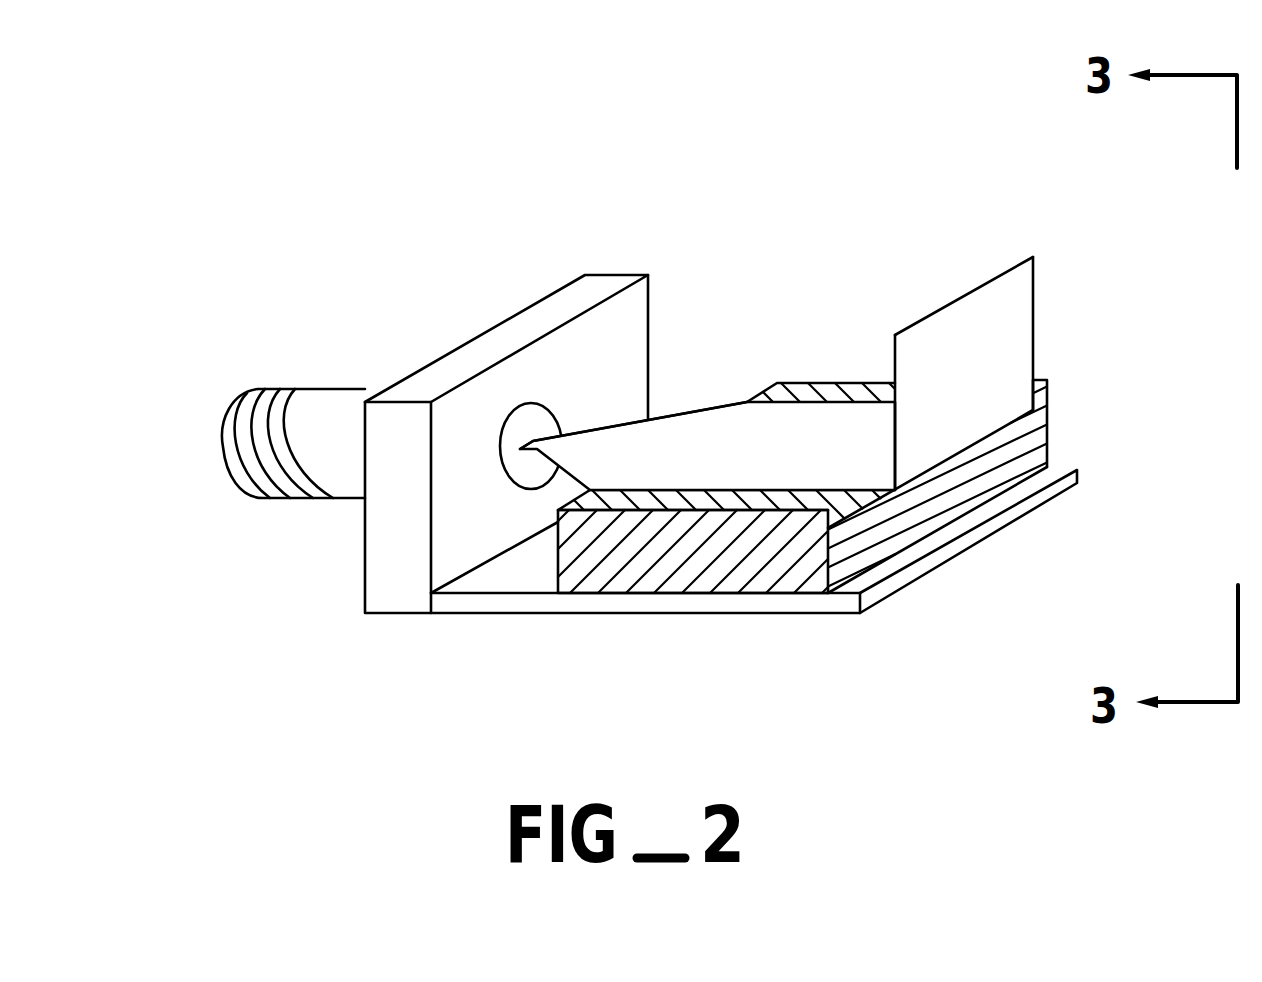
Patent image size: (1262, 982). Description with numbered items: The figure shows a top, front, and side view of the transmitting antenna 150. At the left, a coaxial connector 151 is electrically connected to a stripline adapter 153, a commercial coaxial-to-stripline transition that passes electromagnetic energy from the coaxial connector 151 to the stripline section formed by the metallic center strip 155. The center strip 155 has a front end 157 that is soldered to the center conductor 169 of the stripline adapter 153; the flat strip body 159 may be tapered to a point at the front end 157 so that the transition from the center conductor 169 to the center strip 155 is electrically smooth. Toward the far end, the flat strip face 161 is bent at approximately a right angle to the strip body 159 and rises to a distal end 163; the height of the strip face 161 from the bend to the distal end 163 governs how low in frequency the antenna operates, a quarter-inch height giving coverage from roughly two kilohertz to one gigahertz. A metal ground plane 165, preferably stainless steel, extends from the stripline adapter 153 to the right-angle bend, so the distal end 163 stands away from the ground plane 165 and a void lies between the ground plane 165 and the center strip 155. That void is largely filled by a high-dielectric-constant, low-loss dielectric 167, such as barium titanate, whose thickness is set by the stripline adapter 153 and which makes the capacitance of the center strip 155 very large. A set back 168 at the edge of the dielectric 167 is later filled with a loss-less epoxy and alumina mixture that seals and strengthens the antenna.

The transmitting antenna 150 is at (352, 660).
The coaxial connector 151 is at (280, 413).
The stripline adapter 153 is at (398, 567).
The metallic center strip 155 is at (825, 400).
The front end 157 is at (615, 427).
The flat strip body 159 is at (733, 432).
The flat strip face 161 is at (990, 343).
The distal end 163 is at (957, 297).
The ground plane 165 is at (716, 600).
The dielectric 167 is at (995, 450).
The set back 168 is at (942, 537).
The center conductor 169 is at (533, 435).